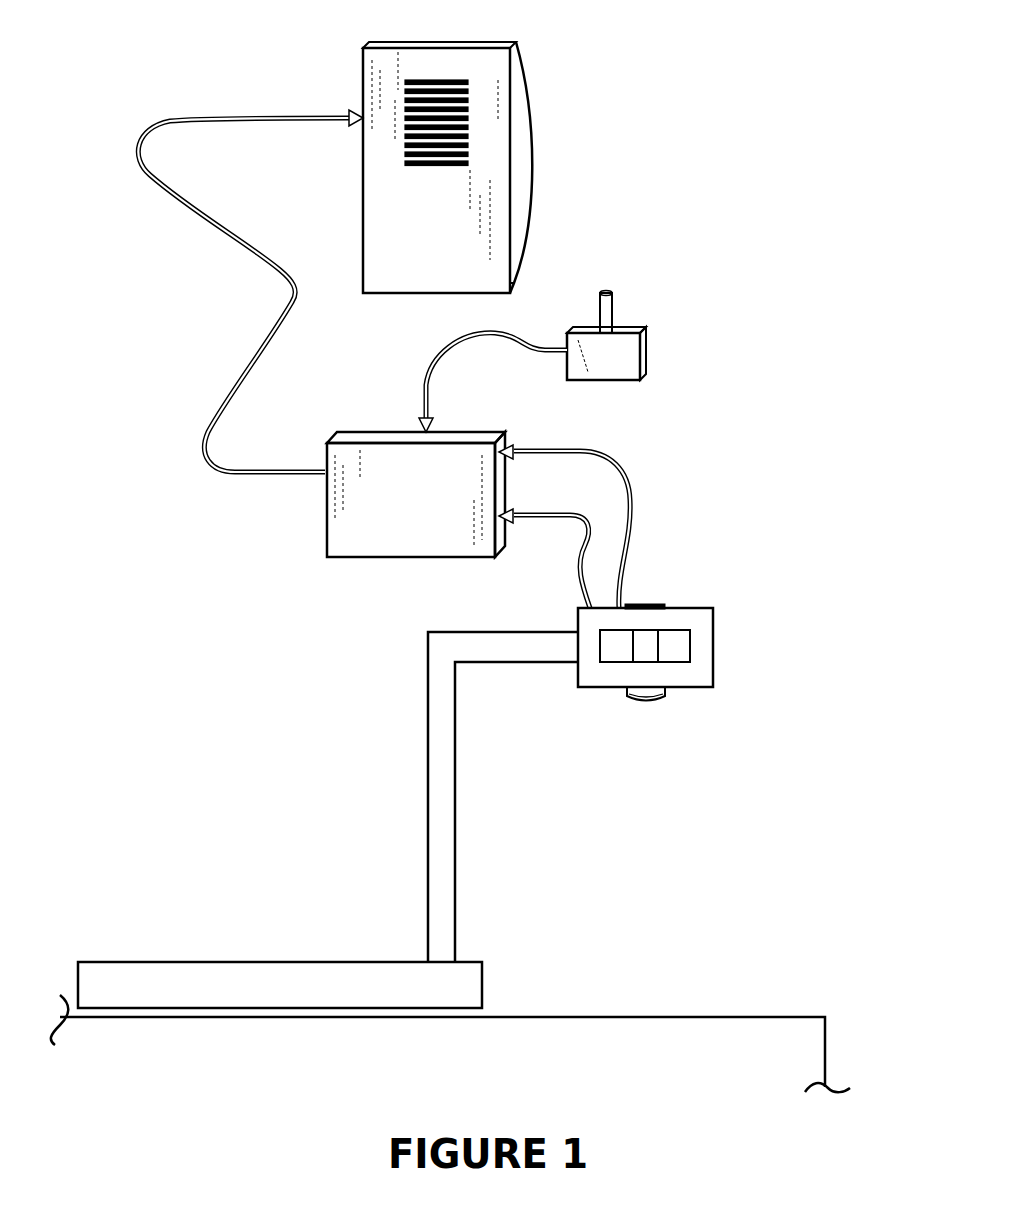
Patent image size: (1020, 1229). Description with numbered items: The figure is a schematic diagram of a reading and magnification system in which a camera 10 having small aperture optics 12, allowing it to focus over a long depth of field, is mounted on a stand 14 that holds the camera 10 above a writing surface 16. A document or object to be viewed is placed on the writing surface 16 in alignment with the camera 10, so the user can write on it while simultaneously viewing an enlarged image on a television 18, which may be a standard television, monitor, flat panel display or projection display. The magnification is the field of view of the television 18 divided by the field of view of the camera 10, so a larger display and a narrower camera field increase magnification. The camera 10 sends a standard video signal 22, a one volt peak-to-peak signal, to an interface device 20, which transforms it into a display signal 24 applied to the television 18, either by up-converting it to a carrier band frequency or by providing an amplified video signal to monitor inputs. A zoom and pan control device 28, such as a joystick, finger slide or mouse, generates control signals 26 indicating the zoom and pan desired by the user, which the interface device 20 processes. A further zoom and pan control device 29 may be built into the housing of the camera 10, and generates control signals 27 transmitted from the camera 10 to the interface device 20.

The camera 10 is at (714, 622).
The small aperture optics 12 is at (670, 695).
The stand 14 is at (428, 860).
The writing surface 16 is at (742, 1017).
The television 18 is at (447, 44).
The interface device 20 is at (327, 528).
The standard video signal 22 is at (600, 448).
The display signal 24 is at (290, 298).
The control signals 26 is at (545, 345).
The control signals 27 is at (577, 548).
The zoom and pan control device 28 is at (718, 376).
The zoom and pan control device 29 is at (647, 637).